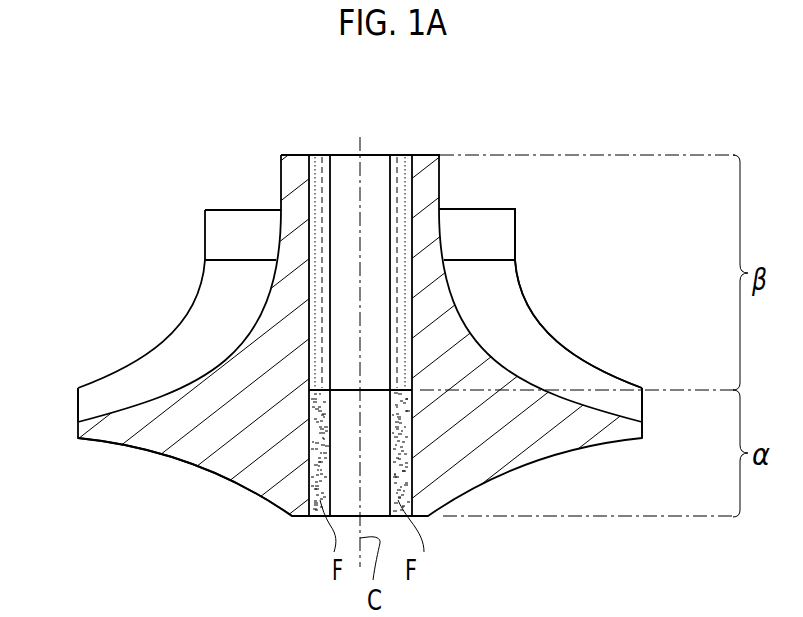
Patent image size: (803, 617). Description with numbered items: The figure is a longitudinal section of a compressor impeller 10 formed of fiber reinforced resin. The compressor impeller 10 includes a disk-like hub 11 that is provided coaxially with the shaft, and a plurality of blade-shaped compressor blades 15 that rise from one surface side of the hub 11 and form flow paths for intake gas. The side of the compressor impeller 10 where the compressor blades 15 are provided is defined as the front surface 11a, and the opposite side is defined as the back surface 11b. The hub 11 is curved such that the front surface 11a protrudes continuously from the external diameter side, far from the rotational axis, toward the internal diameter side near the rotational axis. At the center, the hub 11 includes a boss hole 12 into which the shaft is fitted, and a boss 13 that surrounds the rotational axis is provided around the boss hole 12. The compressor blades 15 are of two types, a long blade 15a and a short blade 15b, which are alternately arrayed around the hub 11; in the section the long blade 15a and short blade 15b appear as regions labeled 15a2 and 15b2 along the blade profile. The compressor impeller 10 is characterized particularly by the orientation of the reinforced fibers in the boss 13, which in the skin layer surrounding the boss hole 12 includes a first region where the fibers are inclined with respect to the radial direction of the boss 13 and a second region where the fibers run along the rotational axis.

The compressor impeller 10 is at (490, 186).
The hub 11 is at (263, 312).
The front surface 11a is at (148, 405).
The back surface 11b is at (110, 444).
The boss hole 12 is at (389, 256).
The boss 13 is at (443, 113).
The compressor blade 15 is at (534, 300).
The long blade 15a is at (516, 233).
The upstream region 15a2 is at (504, 253).
The short blade 15b is at (555, 333).
The downstream region 15b2 is at (526, 330).